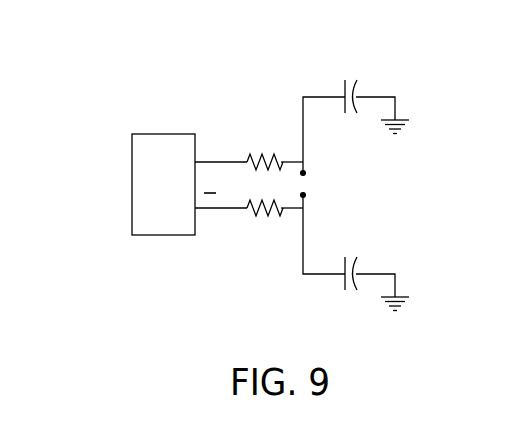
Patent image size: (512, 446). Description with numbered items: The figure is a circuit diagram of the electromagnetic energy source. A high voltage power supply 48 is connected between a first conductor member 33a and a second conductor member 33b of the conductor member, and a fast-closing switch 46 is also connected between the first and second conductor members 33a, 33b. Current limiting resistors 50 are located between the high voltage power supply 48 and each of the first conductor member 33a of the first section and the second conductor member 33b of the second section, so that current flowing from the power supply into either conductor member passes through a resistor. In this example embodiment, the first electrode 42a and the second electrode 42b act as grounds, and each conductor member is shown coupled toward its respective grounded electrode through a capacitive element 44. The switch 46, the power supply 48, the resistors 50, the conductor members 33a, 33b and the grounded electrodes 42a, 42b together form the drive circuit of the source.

The high voltage power supply 48 is at (158, 134).
The current limiting resistors 50 is at (248, 156).
The fast-closing switch 46 is at (305, 180).
The first conductor member 33a is at (302, 245).
The second conductor member 33b is at (302, 112).
The capacitor 44 is at (348, 82).
The first electrode 42a is at (399, 287).
The second electrode 42b is at (399, 108).